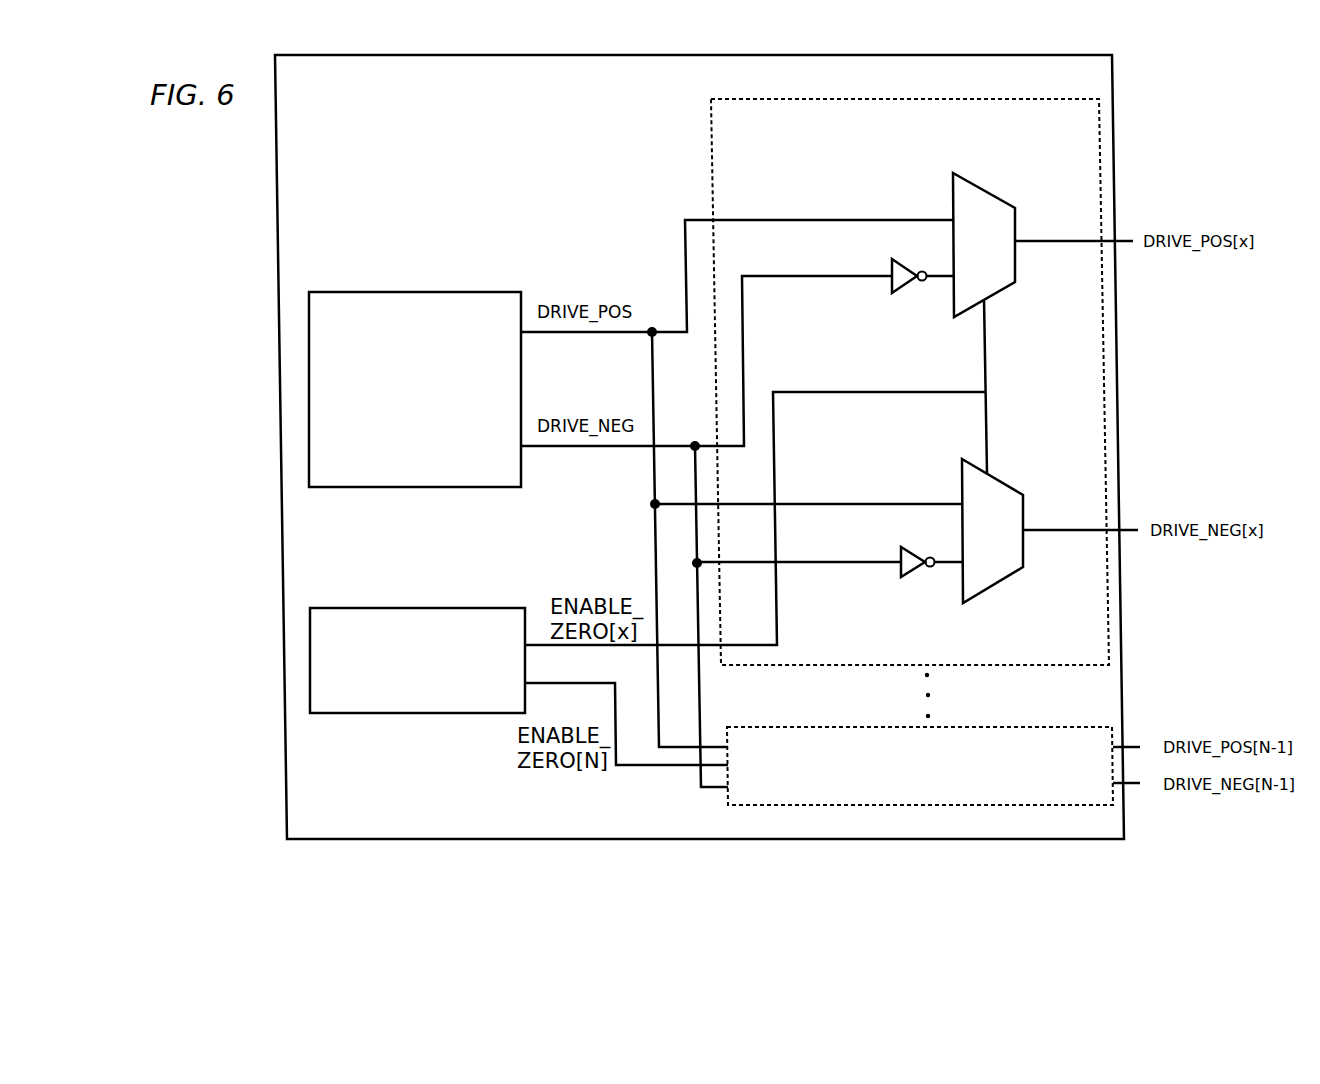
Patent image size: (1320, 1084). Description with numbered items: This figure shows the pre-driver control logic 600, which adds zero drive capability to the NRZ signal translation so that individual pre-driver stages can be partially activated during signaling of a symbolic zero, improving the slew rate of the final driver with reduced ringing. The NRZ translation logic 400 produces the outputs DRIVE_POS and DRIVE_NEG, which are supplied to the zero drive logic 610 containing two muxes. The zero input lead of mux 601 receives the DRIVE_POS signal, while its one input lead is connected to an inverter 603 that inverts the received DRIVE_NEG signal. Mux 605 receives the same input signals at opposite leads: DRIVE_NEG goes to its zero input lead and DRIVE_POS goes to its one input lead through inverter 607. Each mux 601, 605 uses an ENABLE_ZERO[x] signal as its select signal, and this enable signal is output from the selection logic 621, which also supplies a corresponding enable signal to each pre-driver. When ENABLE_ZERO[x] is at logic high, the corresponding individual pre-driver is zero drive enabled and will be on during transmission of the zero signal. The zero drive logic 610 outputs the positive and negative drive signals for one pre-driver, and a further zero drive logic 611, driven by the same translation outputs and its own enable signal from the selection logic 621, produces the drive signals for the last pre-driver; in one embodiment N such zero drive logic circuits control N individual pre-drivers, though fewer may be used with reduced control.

The NRZ translation logic 400 is at (413, 292).
The pre-driver control logic 600 is at (699, 447).
The mux 601 is at (983, 190).
The inverter 603 is at (899, 295).
The mux 605 is at (1035, 507).
The inverter 607 is at (923, 577).
The zero drive logic 610 is at (903, 98).
The zero drive logic 611 is at (922, 806).
The selection logic 621 is at (417, 714).